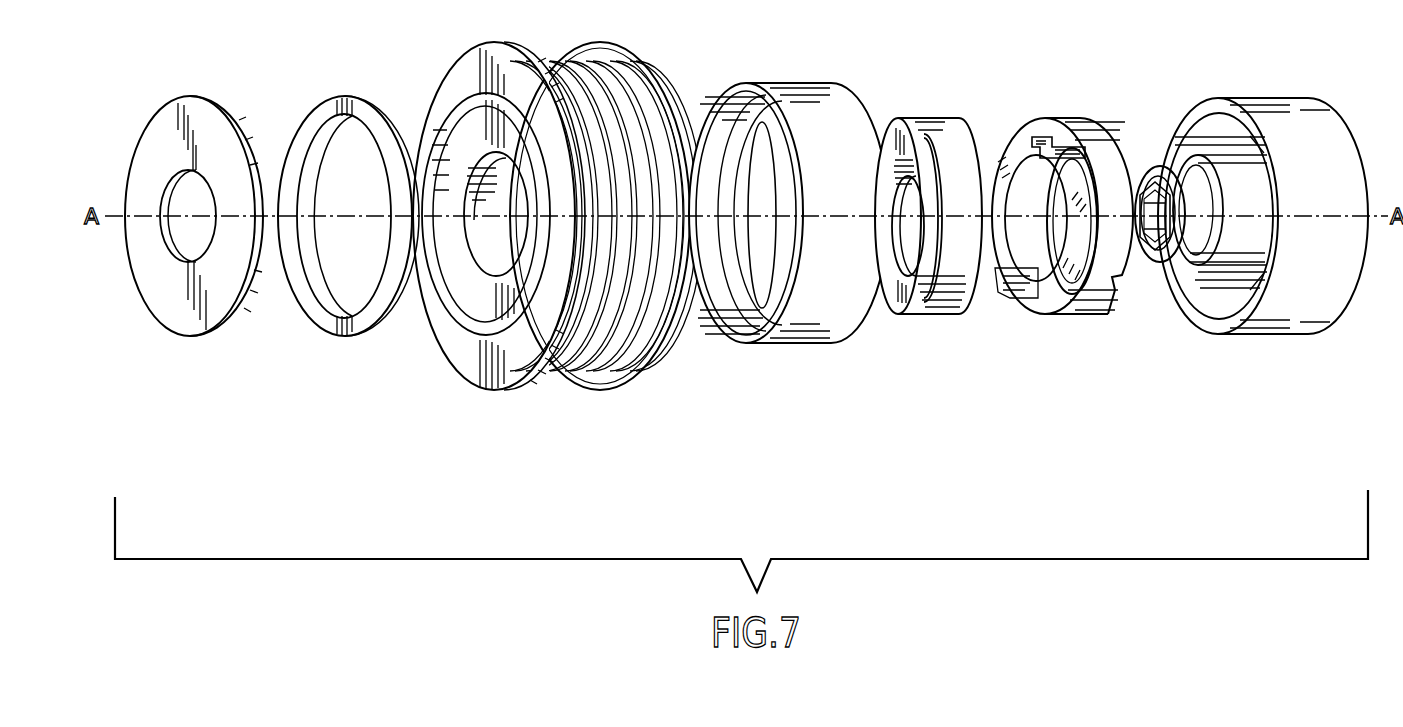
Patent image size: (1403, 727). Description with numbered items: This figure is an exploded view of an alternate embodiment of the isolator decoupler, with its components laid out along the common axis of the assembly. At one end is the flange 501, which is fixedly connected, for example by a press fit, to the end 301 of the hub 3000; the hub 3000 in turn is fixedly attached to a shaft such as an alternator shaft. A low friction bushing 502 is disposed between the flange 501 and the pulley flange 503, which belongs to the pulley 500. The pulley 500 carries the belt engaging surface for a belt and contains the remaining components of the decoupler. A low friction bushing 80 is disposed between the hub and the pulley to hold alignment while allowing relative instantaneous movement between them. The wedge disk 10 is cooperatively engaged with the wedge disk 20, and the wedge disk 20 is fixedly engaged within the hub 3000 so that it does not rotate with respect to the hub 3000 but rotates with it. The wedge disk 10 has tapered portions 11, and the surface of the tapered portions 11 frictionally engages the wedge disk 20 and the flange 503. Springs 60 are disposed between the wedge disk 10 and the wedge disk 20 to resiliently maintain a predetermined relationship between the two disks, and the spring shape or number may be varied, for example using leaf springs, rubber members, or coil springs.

The flange 501 is at (203, 335).
The low friction bushing 502 is at (350, 335).
The pulley 500 is at (473, 385).
The pulley flange 503 is at (472, 140).
The low friction bushing 80 is at (755, 345).
The wedge disk 10 is at (902, 315).
The tapered portions 11 is at (907, 118).
The wedge disk 20 is at (1053, 315).
The springs 60 is at (1050, 137).
The end of hub 301 is at (1151, 258).
The hub 3000 is at (1240, 97).